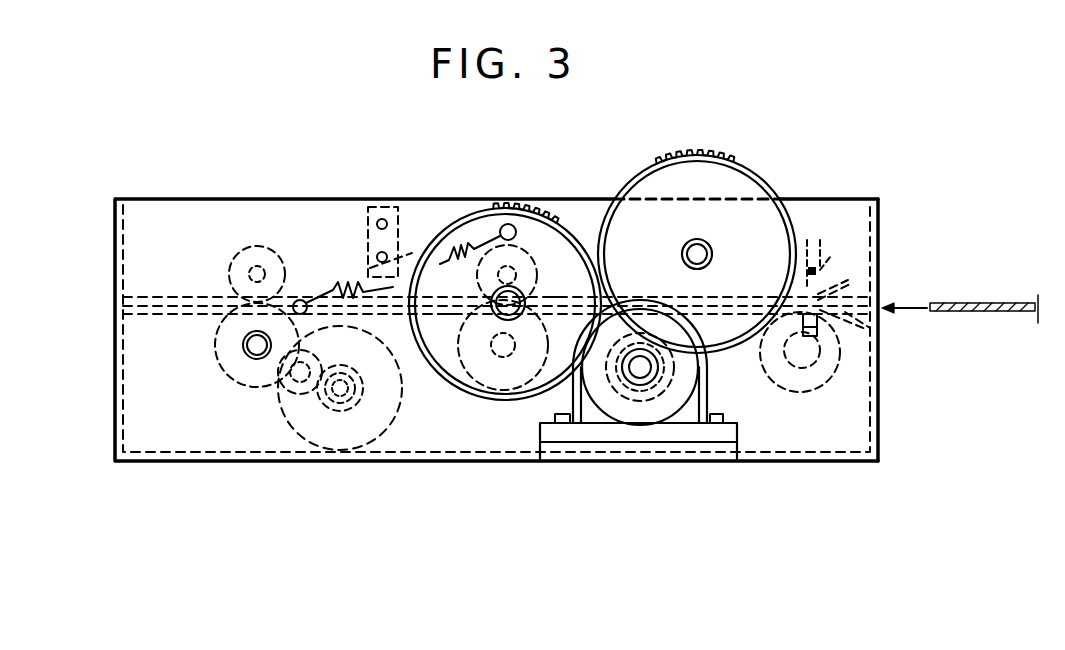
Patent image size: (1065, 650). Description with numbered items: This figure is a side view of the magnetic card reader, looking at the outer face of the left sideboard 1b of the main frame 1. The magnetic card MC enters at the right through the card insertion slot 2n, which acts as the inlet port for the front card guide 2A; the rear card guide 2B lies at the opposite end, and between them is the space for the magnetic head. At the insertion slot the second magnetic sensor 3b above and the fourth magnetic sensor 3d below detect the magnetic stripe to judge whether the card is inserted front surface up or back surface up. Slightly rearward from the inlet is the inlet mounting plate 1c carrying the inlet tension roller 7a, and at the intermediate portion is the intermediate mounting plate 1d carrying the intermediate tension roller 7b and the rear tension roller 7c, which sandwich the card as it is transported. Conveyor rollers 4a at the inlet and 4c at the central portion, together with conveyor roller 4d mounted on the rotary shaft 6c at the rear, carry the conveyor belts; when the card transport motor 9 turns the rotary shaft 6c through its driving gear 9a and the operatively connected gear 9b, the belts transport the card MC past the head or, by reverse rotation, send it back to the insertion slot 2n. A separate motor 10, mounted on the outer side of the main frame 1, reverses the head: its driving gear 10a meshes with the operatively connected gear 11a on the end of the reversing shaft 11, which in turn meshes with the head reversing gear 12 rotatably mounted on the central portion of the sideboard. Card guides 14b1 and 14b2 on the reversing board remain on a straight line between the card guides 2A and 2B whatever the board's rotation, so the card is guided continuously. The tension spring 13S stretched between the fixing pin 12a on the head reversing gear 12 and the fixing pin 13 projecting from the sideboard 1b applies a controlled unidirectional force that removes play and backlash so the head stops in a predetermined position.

The main frame 1 is at (852, 477).
The left sideboard 1b is at (870, 388).
The inlet mounting plate 1c is at (880, 233).
The intermediate mounting plate 1d is at (395, 232).
The front card guide 2A is at (730, 293).
The rear card guide 2B is at (205, 295).
The card insertion slot 2n is at (867, 325).
The second magnetic sensor 3b is at (838, 283).
The fourth magnetic sensor 3d is at (790, 305).
The conveyor roller 4a is at (807, 385).
The conveyor roller 4c is at (480, 380).
The conveyor roller 4d is at (257, 385).
The rotary shaft 6c is at (243, 350).
The inlet tension roller 7a is at (775, 290).
The intermediate tension roller 7b is at (530, 262).
The rear tension roller 7c is at (255, 246).
The card transport motor 9 is at (355, 437).
The driving gear 9a is at (330, 413).
The operatively connected gear 9b is at (298, 400).
The motor 10 is at (660, 412).
The driving gear 10a is at (631, 397).
The reversing shaft 11 is at (681, 247).
The operatively connected gear 11a is at (718, 182).
The head reversing gear 12 is at (470, 210).
The fixing pin 12a is at (506, 224).
The fixing pin 13 is at (300, 299).
The tension spring 13S is at (347, 283).
The card guide 14b1 is at (552, 293).
The card guide 14b2 is at (442, 320).
The magnetic card MC is at (970, 303).